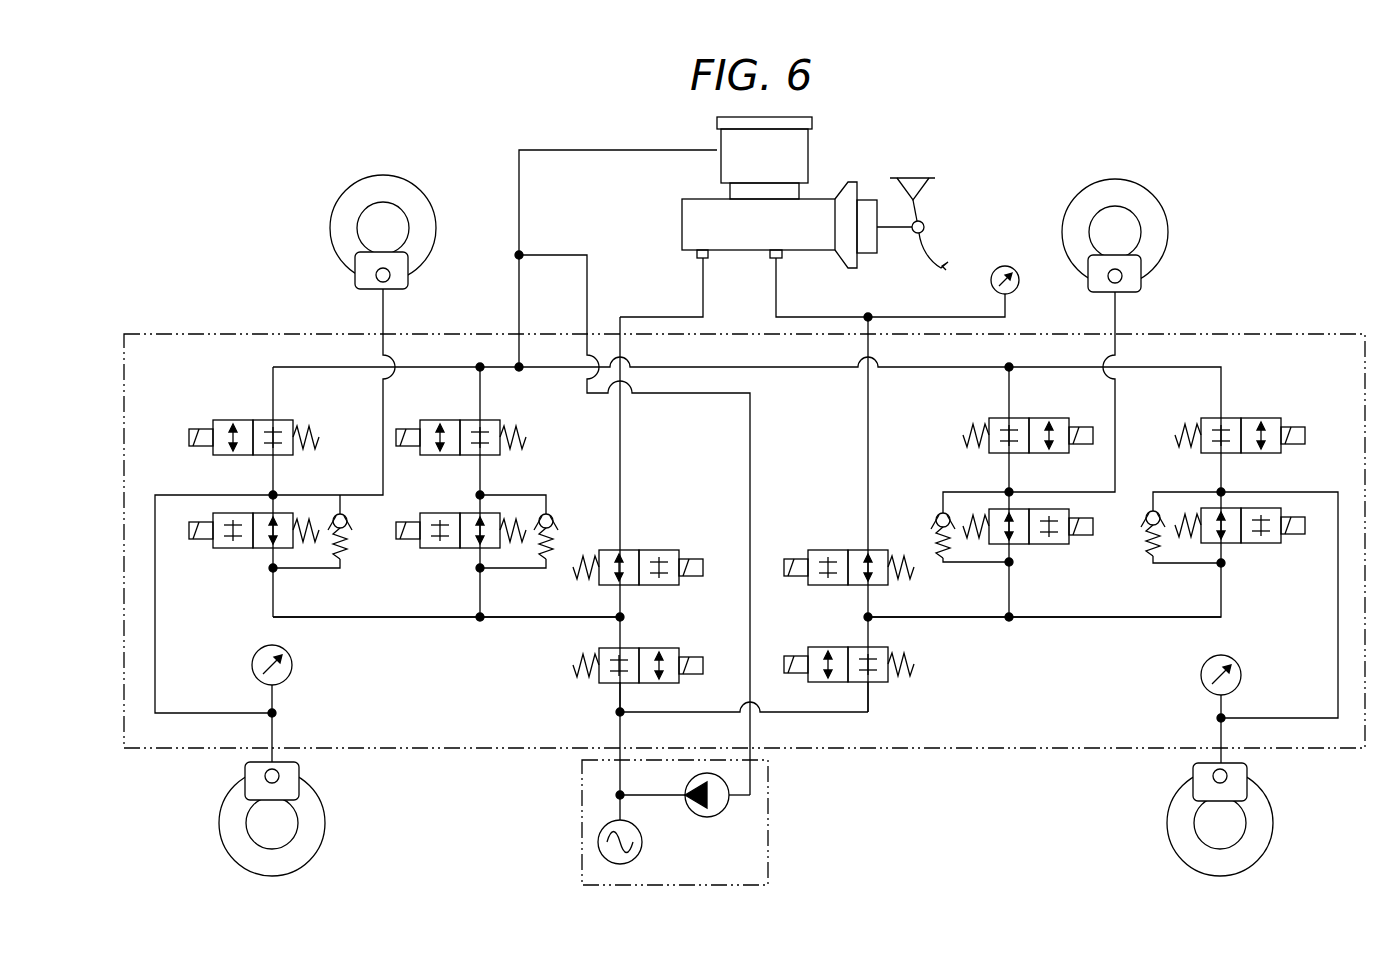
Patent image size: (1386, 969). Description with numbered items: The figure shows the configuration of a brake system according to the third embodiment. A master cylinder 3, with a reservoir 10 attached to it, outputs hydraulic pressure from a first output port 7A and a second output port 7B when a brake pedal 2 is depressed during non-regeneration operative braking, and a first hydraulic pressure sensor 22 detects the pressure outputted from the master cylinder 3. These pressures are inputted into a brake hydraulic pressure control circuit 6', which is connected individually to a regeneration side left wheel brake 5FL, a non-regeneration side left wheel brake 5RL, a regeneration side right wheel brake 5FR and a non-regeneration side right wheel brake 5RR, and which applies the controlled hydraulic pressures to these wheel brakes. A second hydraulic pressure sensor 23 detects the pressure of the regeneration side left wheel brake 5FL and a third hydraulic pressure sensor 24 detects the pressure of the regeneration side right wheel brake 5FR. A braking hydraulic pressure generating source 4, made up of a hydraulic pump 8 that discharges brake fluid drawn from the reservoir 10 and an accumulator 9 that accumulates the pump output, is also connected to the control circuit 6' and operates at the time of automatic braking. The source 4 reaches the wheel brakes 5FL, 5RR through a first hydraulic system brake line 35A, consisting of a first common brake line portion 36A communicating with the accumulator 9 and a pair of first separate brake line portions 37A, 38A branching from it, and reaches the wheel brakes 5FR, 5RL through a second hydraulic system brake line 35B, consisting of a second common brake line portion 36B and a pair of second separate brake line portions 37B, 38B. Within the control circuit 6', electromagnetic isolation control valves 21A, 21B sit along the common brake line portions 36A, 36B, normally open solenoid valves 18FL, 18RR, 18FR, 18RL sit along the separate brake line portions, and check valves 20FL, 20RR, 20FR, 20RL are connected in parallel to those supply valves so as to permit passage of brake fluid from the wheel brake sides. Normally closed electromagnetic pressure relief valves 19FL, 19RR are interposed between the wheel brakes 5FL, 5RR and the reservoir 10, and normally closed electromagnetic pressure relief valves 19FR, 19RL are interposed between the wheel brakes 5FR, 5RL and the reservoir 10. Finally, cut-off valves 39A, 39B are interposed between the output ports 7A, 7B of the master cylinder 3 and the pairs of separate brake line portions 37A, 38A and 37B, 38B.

The reservoir 10 is at (808, 155).
The master cylinder 3 is at (682, 215).
The brake pedal 2 is at (948, 262).
The first hydraulic pressure sensor 22 is at (1008, 266).
The first output port 7A is at (703, 262).
The second output port 7B is at (780, 262).
The non-regeneration side right wheel brake 5RR is at (325, 205).
The non-regeneration side left wheel brake 5RL is at (1176, 218).
The regeneration side left wheel brake 5FL is at (338, 832).
The regeneration side right wheel brake 5FR is at (1160, 845).
The first separate brake line portion 38A is at (386, 318).
The second separate brake line portion 38B is at (1118, 318).
The normally closed electromagnetic pressure relief valve 19FL is at (232, 420).
The normally closed electromagnetic pressure relief valve 19RR is at (490, 420).
The normally closed electromagnetic pressure relief valve 19RL is at (1020, 420).
The normally closed electromagnetic pressure relief valve 19FR is at (1272, 400).
The normally open solenoid valve 18FL is at (245, 550).
The normally open solenoid valve 18RR is at (452, 550).
The normally open solenoid valve 18RL is at (1030, 548).
The normally open solenoid valve 18FR is at (1252, 545).
The check valve 20FL is at (360, 529).
The check valve 20RR is at (566, 529).
The check valve 20RL is at (923, 529).
The check valve 20FR is at (1135, 530).
The cut-off valve 39A is at (665, 548).
The cut-off valve 39B is at (836, 548).
The electromagnetic isolation control valve 21A is at (665, 648).
The electromagnetic isolation control valve 21B is at (836, 648).
The first common brake line portion 36A is at (517, 620).
The second common brake line portion 36B is at (1055, 620).
The first separate brake line portion 37A is at (157, 680).
The second separate brake line portion 37B is at (1338, 646).
The first hydraulic system brake line 35A is at (608, 700).
The second hydraulic system brake line 35B is at (878, 698).
The second hydraulic pressure sensor 23 is at (285, 683).
The third hydraulic pressure sensor 24 is at (1200, 690).
The hydraulic pump 8 is at (707, 817).
The accumulator 9 is at (620, 864).
The braking hydraulic pressure generating source 4 is at (768, 858).
The brake hydraulic pressure control circuit 6' is at (744, 575).